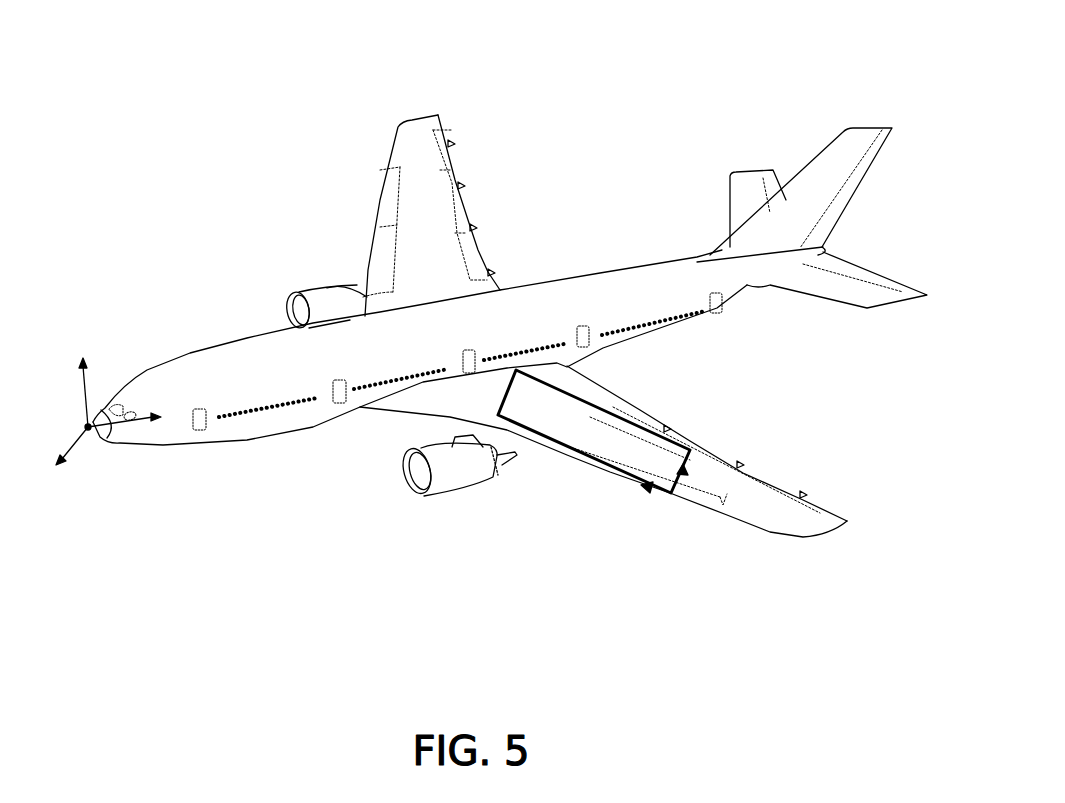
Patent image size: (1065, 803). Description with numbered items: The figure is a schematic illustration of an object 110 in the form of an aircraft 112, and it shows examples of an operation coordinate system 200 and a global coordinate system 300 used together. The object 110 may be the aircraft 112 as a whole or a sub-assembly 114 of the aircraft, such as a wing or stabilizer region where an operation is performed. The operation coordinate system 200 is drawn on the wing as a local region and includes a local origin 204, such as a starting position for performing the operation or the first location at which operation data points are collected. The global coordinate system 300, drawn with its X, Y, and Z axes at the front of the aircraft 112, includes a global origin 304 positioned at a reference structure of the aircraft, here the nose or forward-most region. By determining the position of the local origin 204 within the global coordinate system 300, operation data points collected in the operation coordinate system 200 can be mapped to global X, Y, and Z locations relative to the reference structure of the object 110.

The object 110 is at (197, 60).
The aircraft 112 is at (227, 118).
The sub-assembly of the aircraft 114 is at (188, 357).
The operation coordinate system 200 is at (567, 455).
The local origin 204 is at (671, 495).
The global coordinate system 300 is at (88, 470).
The global origin 304 is at (86, 427).